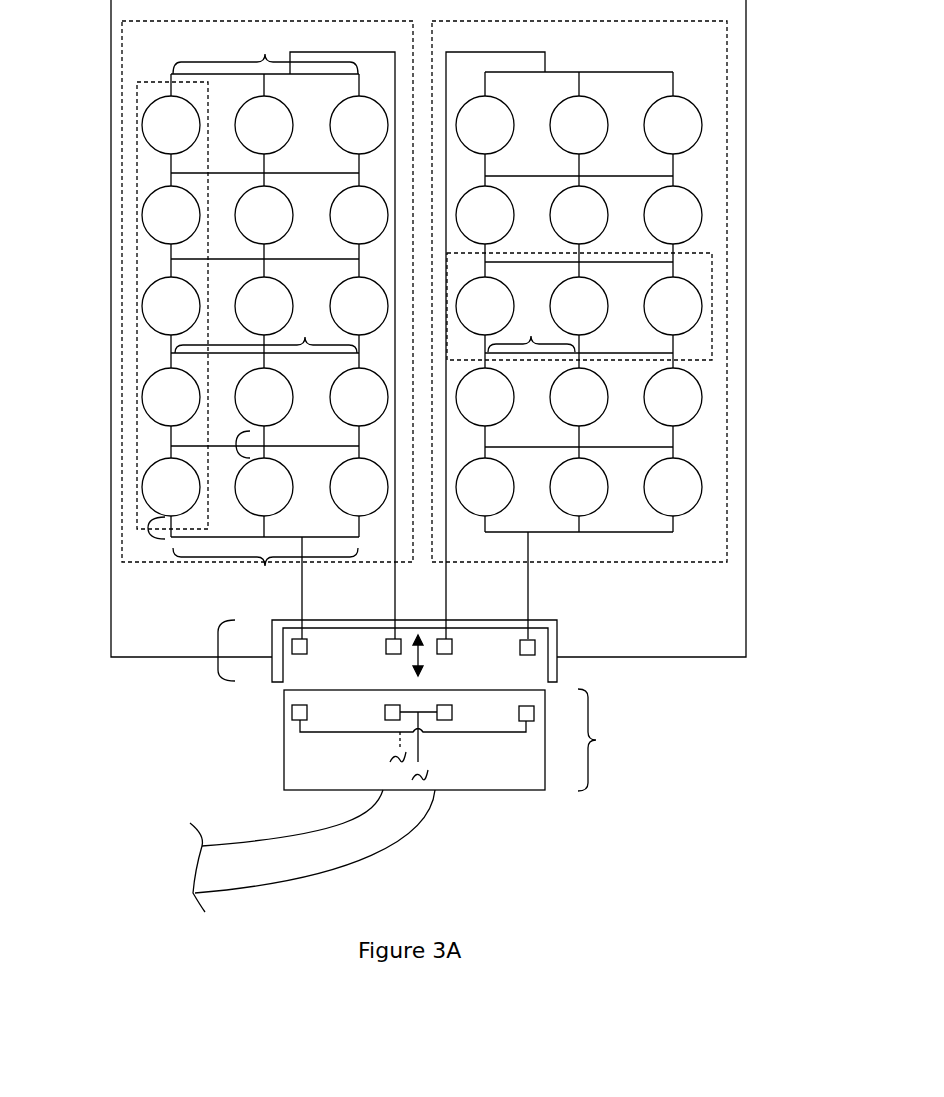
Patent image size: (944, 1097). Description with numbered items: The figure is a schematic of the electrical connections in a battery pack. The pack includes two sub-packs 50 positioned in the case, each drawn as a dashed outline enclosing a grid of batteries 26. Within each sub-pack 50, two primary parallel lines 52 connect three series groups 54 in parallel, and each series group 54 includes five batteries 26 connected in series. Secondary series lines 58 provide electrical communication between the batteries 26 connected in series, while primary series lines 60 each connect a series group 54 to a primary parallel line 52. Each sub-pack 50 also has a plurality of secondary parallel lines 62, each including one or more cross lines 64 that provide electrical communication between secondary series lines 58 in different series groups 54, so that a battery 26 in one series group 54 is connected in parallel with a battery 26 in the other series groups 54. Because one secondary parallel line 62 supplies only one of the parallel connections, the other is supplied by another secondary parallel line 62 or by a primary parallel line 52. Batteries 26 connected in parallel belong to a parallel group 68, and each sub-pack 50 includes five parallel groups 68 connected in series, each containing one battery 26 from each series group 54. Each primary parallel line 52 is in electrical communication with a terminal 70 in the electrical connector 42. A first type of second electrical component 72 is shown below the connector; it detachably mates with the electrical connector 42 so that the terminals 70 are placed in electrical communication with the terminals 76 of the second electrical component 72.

The battery 26 is at (258, 128).
The electrical connector 42 is at (217, 665).
The sub-pack 50 is at (122, 82).
The primary parallel line 52 is at (265, 309).
The series group 54 is at (137, 199).
The secondary series line 58 is at (236, 444).
The primary series line 60 is at (148, 528).
The secondary parallel line 62 is at (266, 332).
The cross line 64 is at (531, 333).
The parallel group 68 is at (712, 303).
The terminal 70 is at (300, 650).
The first type of second electrical component 72 is at (456, 740).
The terminal 76 is at (297, 720).